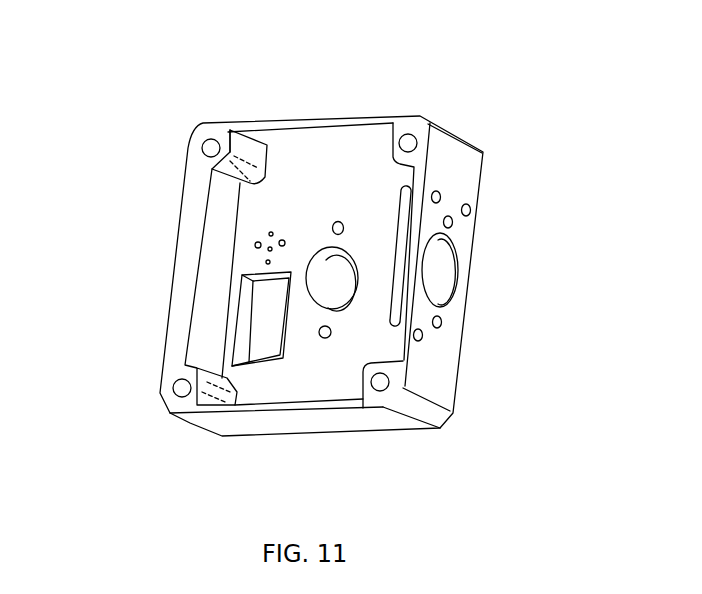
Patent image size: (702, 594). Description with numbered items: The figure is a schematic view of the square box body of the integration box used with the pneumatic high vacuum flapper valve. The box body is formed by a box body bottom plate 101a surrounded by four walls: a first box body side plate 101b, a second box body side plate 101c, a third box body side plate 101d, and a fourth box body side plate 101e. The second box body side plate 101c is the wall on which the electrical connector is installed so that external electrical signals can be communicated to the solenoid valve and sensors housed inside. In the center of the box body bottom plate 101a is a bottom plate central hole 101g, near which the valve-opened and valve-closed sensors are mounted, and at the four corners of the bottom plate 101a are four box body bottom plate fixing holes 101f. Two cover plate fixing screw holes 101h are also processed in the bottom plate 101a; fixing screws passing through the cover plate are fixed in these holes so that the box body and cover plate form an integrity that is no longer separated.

The box body bottom plate 101a is at (298, 183).
The first box body side plate 101b is at (192, 238).
The second box body side plate 101c is at (455, 195).
The third box body side plate 101d is at (288, 123).
The fourth box body side plate 101e is at (326, 432).
The box body bottom plate fixing hole 101f is at (178, 386).
The bottom plate central hole 101g is at (330, 288).
The cover plate fixing screw hole 101h is at (341, 222).